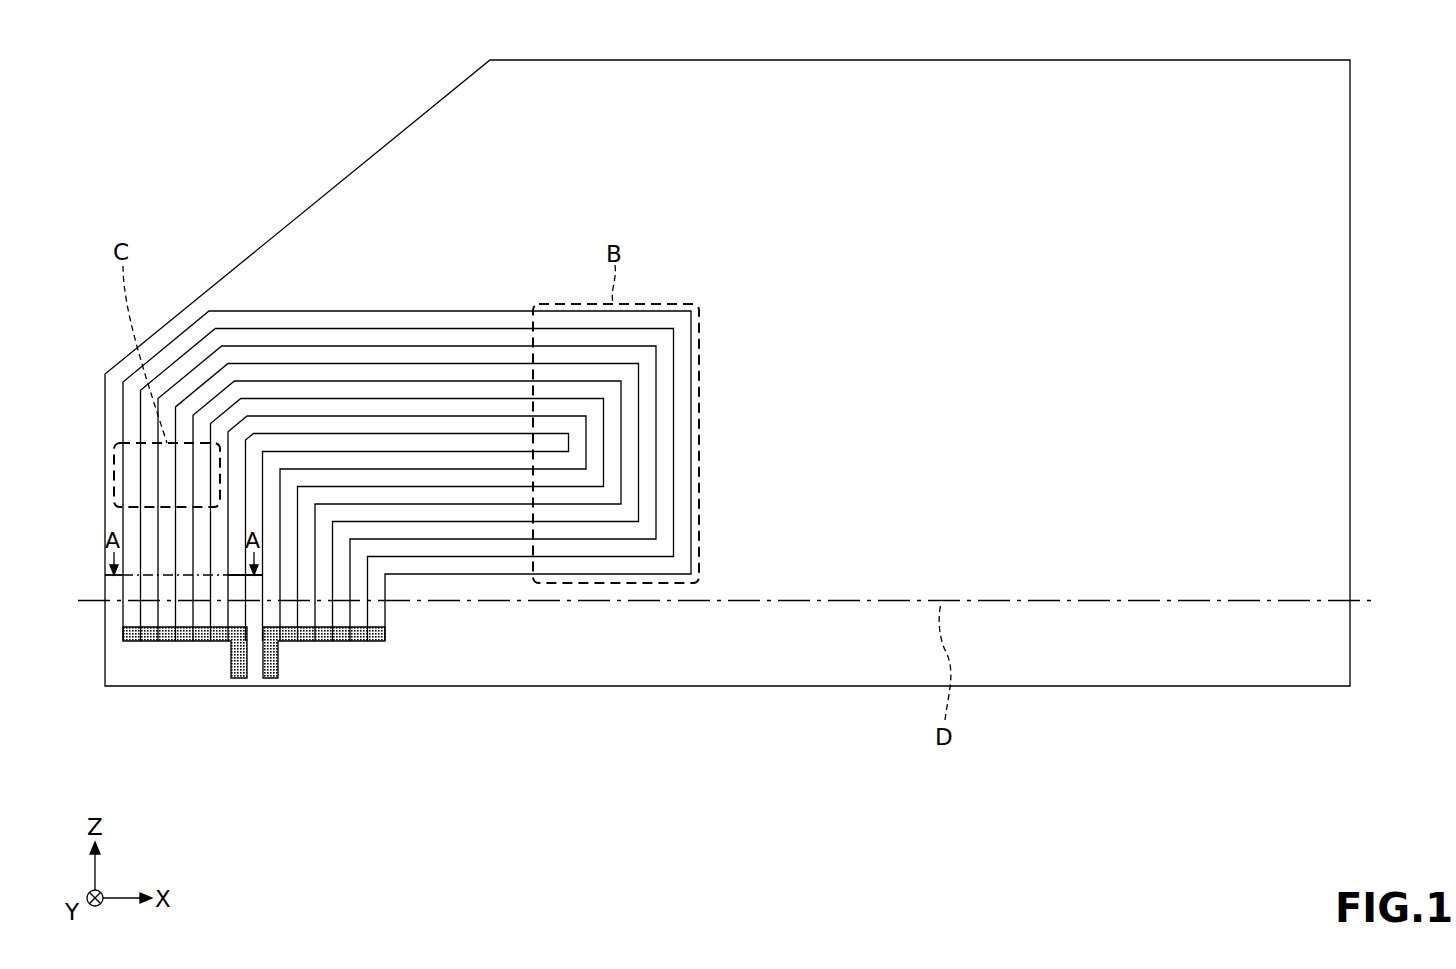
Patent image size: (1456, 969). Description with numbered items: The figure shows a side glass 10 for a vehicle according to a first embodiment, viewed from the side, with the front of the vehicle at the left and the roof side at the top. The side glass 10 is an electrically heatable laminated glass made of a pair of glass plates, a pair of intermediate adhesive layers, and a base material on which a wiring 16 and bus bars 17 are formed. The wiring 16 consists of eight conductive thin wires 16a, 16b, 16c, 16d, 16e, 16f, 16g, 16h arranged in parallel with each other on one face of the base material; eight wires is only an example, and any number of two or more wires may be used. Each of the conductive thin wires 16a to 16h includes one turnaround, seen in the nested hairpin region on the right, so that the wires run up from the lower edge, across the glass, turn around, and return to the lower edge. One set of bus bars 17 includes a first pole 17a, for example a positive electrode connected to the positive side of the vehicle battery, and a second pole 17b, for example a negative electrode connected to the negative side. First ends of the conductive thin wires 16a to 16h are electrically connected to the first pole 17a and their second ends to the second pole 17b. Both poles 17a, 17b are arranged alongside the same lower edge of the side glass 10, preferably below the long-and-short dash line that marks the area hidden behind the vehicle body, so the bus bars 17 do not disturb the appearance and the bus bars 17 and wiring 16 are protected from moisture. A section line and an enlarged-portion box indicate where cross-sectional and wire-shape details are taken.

The side glass 10 is at (163, 50).
The wiring 16 is at (379, 568).
The conductive thin wire 16a is at (123, 613).
The conductive thin wire 16b is at (142, 612).
The conductive thin wire 16c is at (158, 612).
The conductive thin wire 16d is at (175, 612).
The conductive thin wire 16e is at (193, 612).
The conductive thin wire 16f is at (210, 612).
The conductive thin wire 16g is at (228, 612).
The conductive thin wire 16h is at (405, 610).
The bus bars 17 is at (256, 726).
The first pole 17a is at (245, 643).
The second pole 17b is at (333, 641).